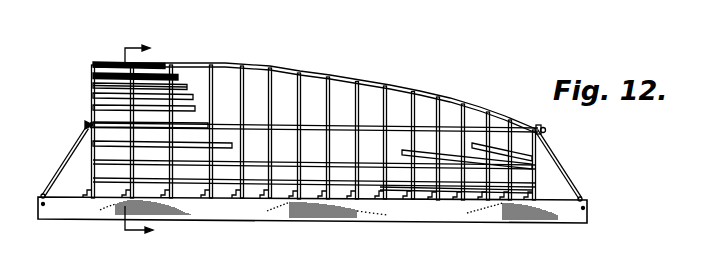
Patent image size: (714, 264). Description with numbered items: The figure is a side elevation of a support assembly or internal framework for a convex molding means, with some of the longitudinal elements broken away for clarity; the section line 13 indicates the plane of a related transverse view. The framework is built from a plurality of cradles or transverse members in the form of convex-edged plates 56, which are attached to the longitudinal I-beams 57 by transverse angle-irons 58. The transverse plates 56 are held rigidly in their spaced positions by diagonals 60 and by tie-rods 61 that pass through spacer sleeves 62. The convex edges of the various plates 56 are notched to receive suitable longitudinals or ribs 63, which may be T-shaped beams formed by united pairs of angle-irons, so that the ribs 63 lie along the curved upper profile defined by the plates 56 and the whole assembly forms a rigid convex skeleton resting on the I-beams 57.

The section line 13- 13 is at (140, 140).
The convex-edged plates 56 is at (300, 80).
The longitudinal I-beams 57 is at (583, 212).
The transverse angle-irons 58 is at (208, 192).
The diagonals 60 is at (58, 174).
The tie-rods 61 is at (85, 125).
The spacer sleeves 62 is at (495, 127).
The longitudinals or ribs 63 is at (108, 121).